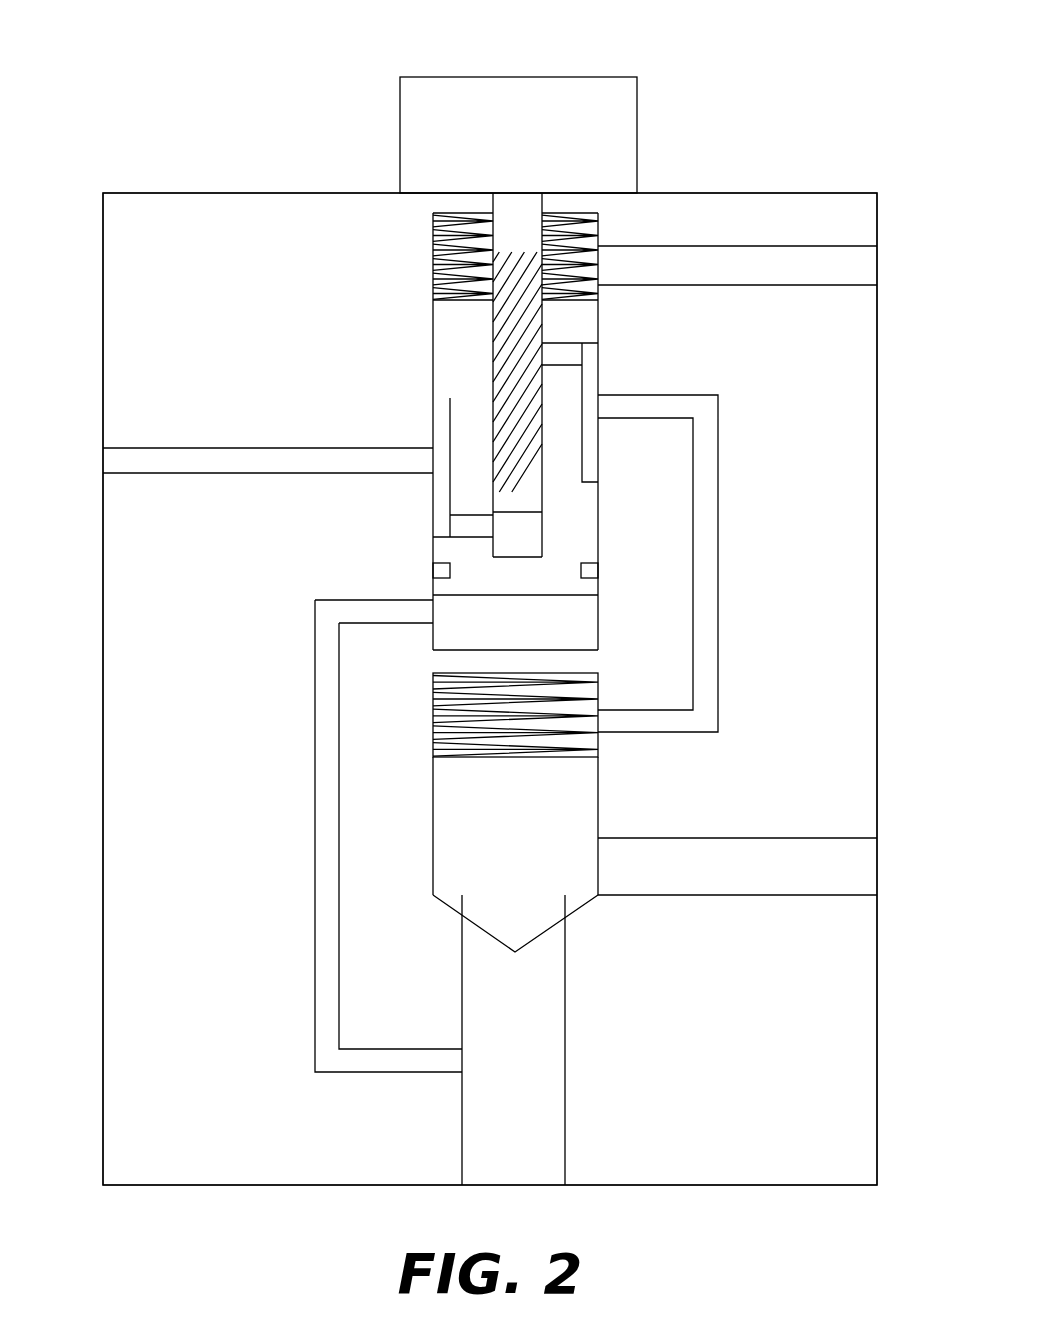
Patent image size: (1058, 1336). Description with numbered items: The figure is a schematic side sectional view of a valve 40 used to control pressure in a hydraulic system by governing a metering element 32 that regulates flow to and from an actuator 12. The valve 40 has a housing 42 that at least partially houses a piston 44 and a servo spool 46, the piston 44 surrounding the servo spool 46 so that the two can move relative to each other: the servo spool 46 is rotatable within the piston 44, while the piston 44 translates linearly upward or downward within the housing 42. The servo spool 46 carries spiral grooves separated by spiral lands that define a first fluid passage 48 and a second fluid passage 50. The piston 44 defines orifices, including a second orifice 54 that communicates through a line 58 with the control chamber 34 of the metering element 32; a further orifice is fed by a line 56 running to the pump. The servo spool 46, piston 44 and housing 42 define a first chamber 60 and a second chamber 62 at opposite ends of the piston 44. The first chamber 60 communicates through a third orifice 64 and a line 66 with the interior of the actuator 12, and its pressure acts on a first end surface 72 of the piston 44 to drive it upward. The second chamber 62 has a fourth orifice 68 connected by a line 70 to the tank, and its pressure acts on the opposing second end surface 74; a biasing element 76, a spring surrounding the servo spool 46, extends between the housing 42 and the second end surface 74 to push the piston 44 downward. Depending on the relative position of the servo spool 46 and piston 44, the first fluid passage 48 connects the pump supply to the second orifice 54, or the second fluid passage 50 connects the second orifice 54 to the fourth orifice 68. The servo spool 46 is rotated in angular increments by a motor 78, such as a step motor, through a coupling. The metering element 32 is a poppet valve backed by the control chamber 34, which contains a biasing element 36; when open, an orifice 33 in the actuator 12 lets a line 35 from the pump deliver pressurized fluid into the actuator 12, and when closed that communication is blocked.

The actuator 12 is at (548, 1065).
The metering element 32 is at (573, 792).
The orifice 33 is at (565, 937).
The control chamber 34 is at (433, 730).
The line 35 is at (802, 895).
The biasing element 36 is at (596, 683).
The valve 40 is at (742, 100).
The housing 42 is at (840, 445).
The piston 44 is at (583, 504).
The servo spool 46 is at (515, 205).
The first fluid passage 48 is at (530, 337).
The second fluid passage 50 is at (505, 450).
The second orifice 54 is at (592, 435).
The line 56 is at (145, 473).
The line 58 is at (718, 545).
The first chamber 60 is at (598, 608).
The second chamber 62 is at (598, 243).
The third orifice 64 is at (433, 606).
The line 66 is at (315, 968).
The fourth orifice 68 is at (598, 282).
The line 70 is at (835, 285).
The first end surface 72 is at (436, 628).
The second end surface 74 is at (433, 293).
The biasing element 76 is at (433, 233).
The motor 78 is at (566, 77).